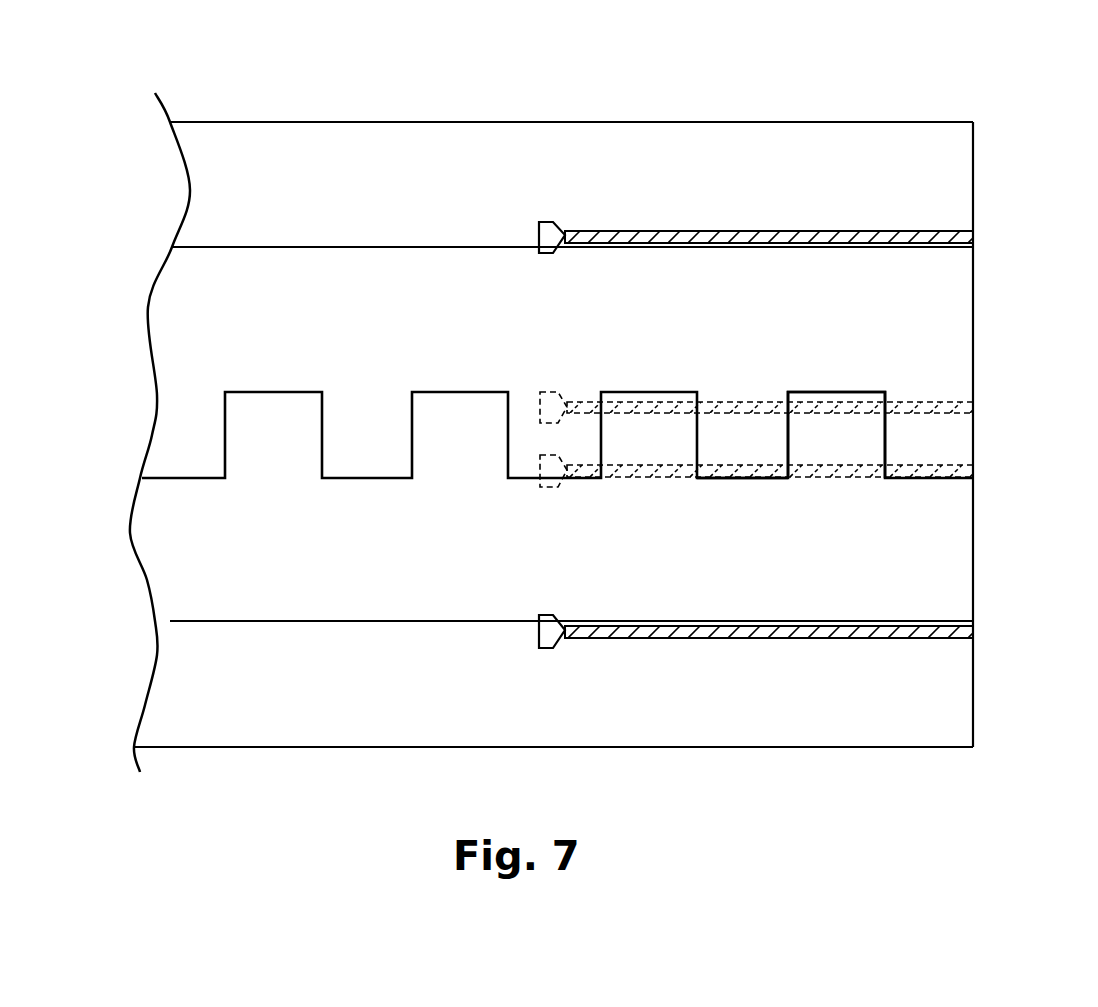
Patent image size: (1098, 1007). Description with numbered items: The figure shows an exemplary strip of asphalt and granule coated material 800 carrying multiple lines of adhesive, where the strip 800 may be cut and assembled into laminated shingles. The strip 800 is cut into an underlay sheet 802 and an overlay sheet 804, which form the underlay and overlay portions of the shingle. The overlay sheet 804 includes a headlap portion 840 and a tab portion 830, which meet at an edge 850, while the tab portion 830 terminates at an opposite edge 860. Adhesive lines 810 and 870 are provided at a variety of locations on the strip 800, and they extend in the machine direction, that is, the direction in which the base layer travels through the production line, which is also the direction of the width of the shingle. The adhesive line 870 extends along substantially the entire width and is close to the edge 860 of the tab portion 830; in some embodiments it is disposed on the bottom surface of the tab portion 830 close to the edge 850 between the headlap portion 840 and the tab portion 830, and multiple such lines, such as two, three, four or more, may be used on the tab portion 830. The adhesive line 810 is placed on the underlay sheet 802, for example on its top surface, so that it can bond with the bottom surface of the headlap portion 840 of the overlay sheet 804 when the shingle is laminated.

The strip of asphalt and granule coated material 800 is at (594, 101).
The underlay sheet 802 is at (665, 162).
The overlay sheet 804 is at (948, 293).
The adhesive line 810 is at (984, 233).
The tab portion 830 is at (208, 392).
The headlap portion 840 is at (208, 194).
The edge between headlap portion and tab portion 850 is at (863, 391).
The edge of tab portion 860 is at (766, 486).
The adhesive line 870 is at (986, 405).